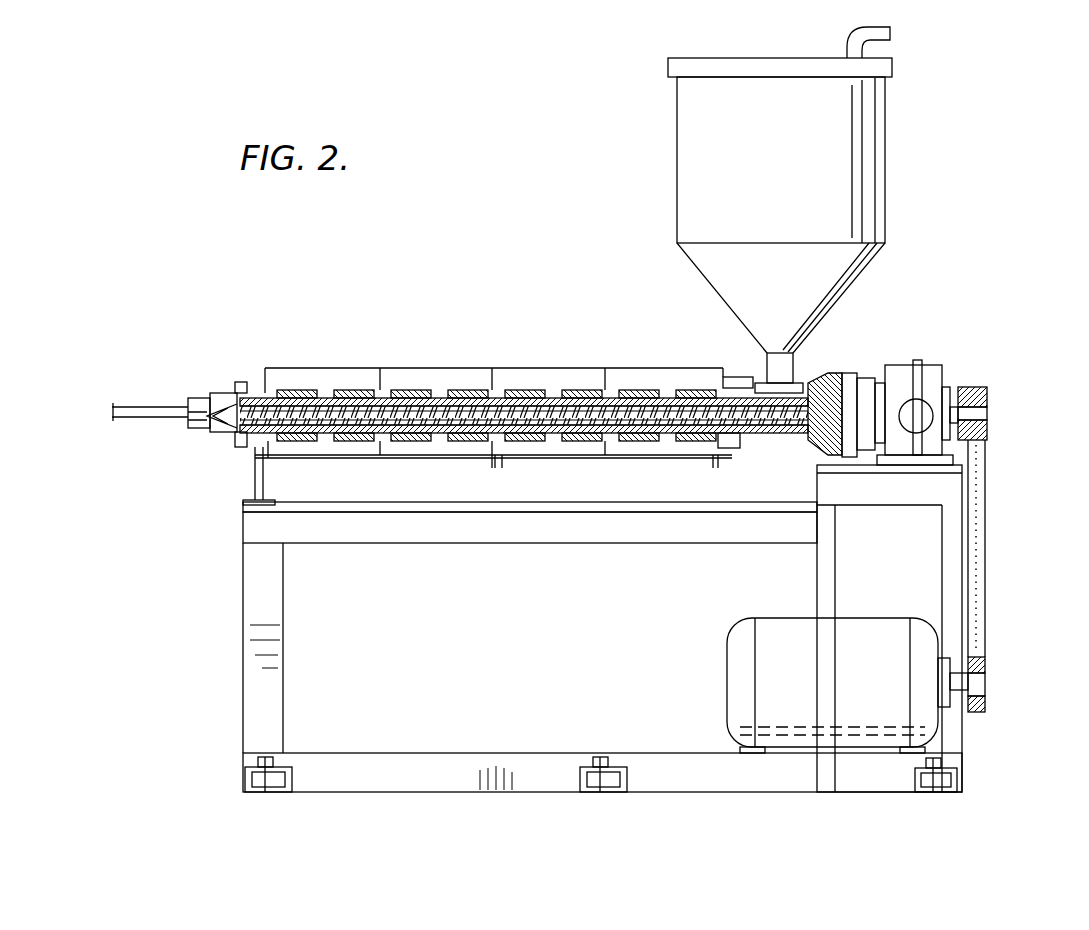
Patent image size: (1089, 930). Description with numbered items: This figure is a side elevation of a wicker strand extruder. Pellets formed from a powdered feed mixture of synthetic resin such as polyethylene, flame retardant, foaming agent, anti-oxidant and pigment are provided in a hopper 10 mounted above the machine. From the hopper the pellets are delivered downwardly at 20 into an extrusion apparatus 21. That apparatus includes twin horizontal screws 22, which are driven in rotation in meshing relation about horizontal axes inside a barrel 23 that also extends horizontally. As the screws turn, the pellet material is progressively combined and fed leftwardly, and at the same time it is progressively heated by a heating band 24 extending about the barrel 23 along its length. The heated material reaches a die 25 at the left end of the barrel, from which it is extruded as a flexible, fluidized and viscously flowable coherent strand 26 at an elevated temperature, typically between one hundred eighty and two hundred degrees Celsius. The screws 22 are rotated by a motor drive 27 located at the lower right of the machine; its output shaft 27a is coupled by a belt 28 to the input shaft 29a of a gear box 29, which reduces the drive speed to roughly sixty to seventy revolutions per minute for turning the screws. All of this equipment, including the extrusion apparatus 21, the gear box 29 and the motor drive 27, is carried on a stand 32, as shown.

The hopper 10 is at (780, 190).
The pellet delivery 20 is at (788, 367).
The extrusion apparatus 21 is at (785, 447).
The twin horizontal screws 22 is at (645, 437).
The barrel 23 is at (440, 427).
The heating band 24 is at (352, 393).
The die 25 is at (212, 418).
The strand 26 is at (153, 405).
The motor drive 27 is at (923, 715).
The output shaft 27a is at (978, 680).
The belt 28 is at (983, 532).
The gear box 29 is at (929, 345).
The input shaft 29a is at (987, 412).
The stand 32 is at (235, 603).